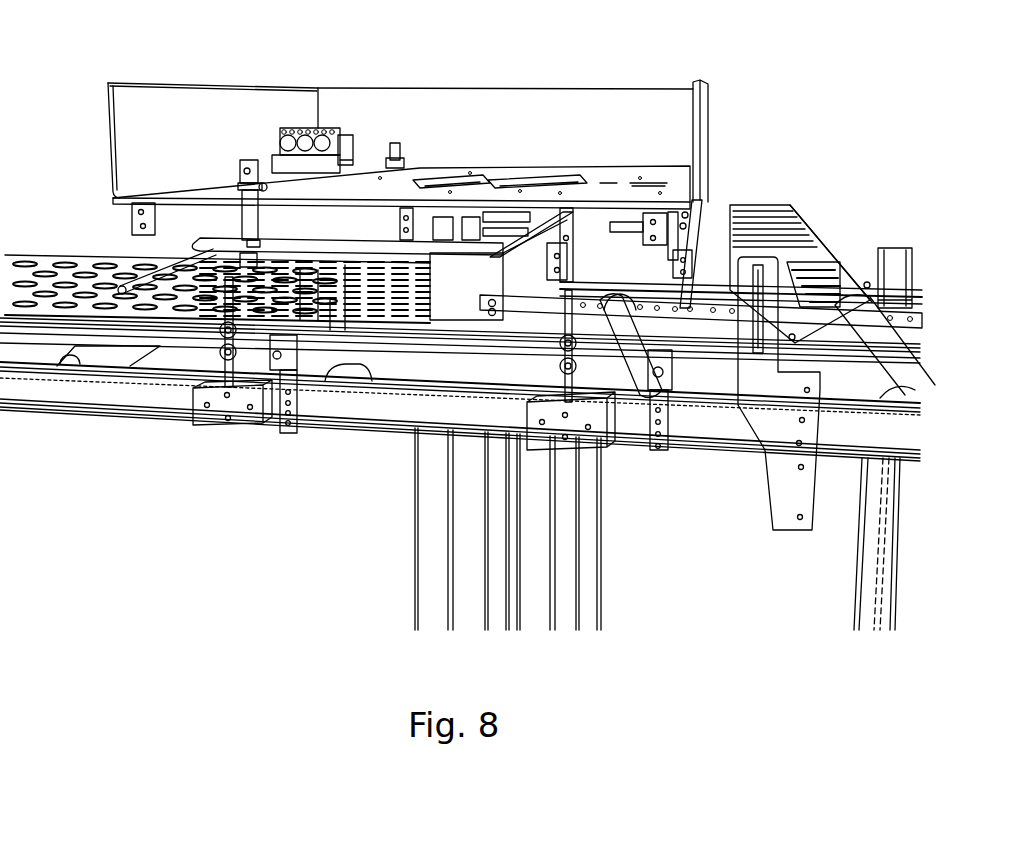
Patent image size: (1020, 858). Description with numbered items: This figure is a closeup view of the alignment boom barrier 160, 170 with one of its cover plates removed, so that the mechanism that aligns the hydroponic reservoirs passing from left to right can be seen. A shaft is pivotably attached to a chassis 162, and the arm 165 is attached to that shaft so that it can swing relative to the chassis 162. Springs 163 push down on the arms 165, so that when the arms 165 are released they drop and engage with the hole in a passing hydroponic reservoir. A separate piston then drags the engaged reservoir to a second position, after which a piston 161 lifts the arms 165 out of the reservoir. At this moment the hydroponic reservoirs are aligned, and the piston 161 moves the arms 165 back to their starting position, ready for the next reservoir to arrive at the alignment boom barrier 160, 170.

The alignment boom barrier 160 is at (658, 168).
The alignment boom barrier 170 is at (658, 168).
The piston 161 is at (252, 240).
The chassis 162 is at (693, 228).
The springs 163 is at (260, 253).
The arm 165 is at (350, 292).